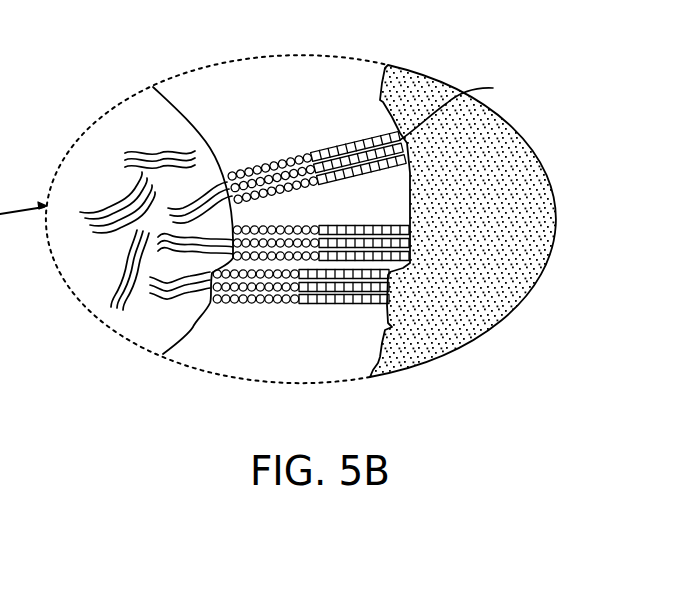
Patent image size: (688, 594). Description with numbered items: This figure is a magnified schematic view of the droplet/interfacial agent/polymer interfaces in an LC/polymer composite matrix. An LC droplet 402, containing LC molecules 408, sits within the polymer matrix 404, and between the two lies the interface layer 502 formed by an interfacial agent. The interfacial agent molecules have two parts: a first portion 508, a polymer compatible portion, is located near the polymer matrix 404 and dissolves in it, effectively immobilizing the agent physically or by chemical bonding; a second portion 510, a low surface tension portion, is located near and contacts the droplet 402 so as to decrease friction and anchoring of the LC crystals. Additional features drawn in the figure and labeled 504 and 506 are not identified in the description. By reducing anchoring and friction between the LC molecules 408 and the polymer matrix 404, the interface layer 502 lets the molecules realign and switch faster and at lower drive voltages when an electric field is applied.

The droplet 402 is at (127, 117).
The polymer matrix 404 is at (432, 95).
The LC molecules 408 is at (118, 193).
The interface layer 502 is at (242, 77).
The layer 504 is at (467, 107).
The strand 506 is at (298, 280).
The first portion 508 is at (368, 306).
The second portion 510 is at (242, 303).